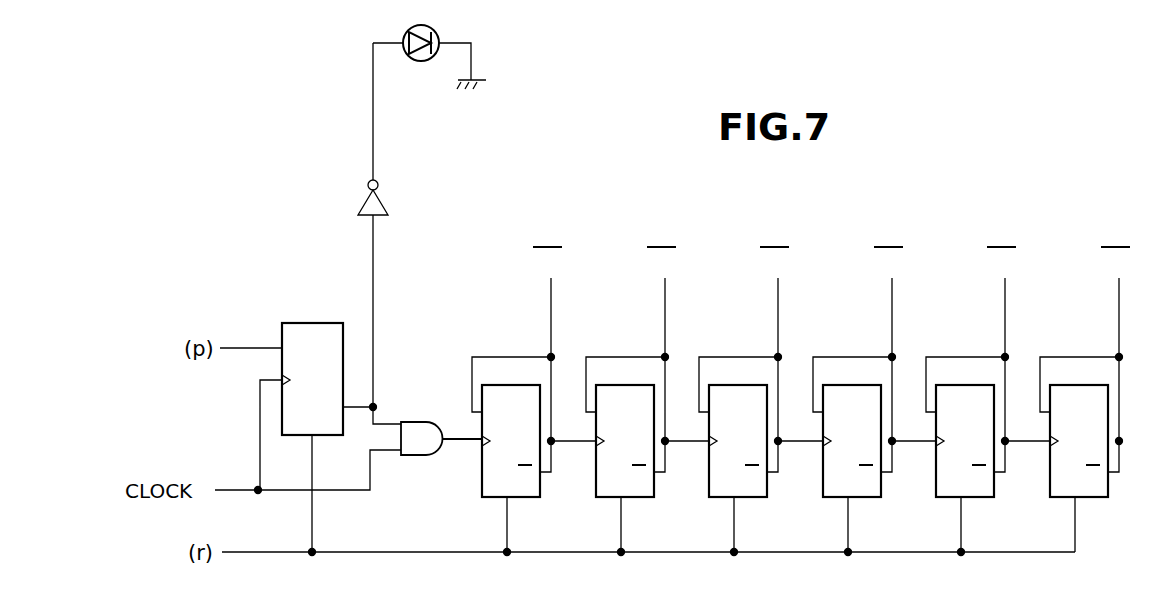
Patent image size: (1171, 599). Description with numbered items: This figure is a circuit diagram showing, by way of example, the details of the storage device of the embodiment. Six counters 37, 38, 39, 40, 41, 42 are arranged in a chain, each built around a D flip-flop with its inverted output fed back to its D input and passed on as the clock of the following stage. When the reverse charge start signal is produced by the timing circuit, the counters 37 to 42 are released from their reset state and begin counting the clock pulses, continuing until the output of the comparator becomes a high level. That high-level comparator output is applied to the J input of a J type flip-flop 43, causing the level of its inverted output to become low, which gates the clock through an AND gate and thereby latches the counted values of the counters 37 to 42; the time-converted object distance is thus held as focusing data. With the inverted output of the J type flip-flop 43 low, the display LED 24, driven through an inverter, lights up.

The display LED 24 is at (419, 61).
The J type flip-flop 43 is at (304, 323).
The counter 37 is at (525, 497).
The counter 38 is at (639, 497).
The counter 39 is at (752, 497).
The counter 40 is at (866, 497).
The counter 41 is at (979, 497).
The counter 42 is at (1093, 497).